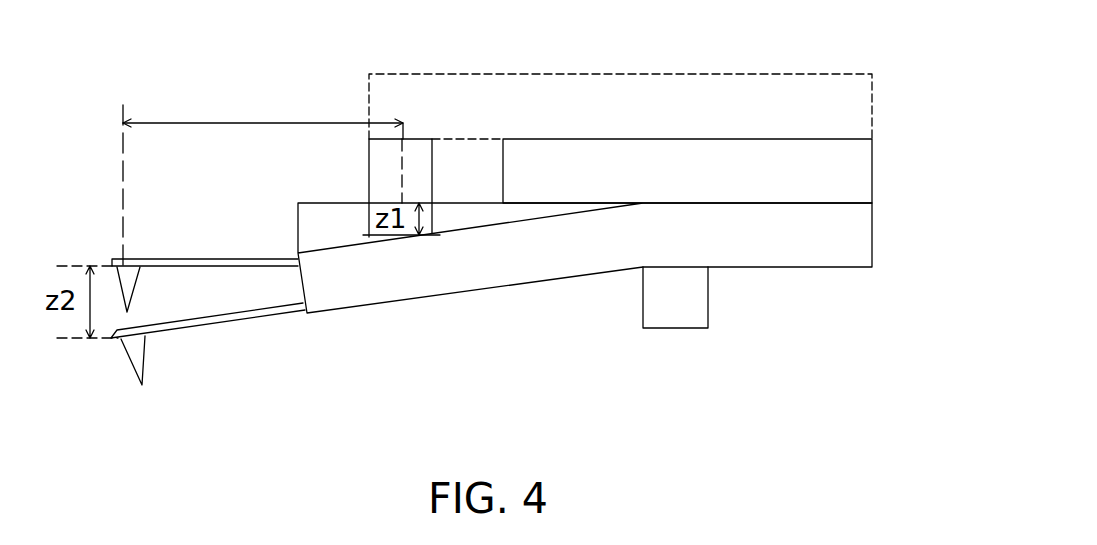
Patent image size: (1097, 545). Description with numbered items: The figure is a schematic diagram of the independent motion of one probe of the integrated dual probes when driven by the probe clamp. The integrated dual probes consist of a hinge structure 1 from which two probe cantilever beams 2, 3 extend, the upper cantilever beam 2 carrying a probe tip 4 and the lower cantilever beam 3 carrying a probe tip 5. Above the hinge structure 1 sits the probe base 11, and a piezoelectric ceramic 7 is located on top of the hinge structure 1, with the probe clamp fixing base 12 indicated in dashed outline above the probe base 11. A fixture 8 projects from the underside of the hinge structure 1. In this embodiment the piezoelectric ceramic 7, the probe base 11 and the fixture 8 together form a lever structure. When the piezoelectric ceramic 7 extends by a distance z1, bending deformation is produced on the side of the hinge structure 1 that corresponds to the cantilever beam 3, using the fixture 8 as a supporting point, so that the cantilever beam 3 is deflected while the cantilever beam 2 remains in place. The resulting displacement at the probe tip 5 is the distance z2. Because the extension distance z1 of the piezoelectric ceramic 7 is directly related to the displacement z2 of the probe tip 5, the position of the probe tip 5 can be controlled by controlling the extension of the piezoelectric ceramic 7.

The hinge structure 1 is at (510, 273).
The probe cantilever beam 2 is at (233, 262).
The probe cantilever beam 3 is at (210, 327).
The probe tip 4 is at (125, 287).
The probe tip 5 is at (143, 363).
The piezoelectric ceramic 7 is at (387, 183).
The fixture 8 is at (688, 320).
The probe base 11 is at (862, 182).
The probe clamp fixing base 12 is at (857, 103).